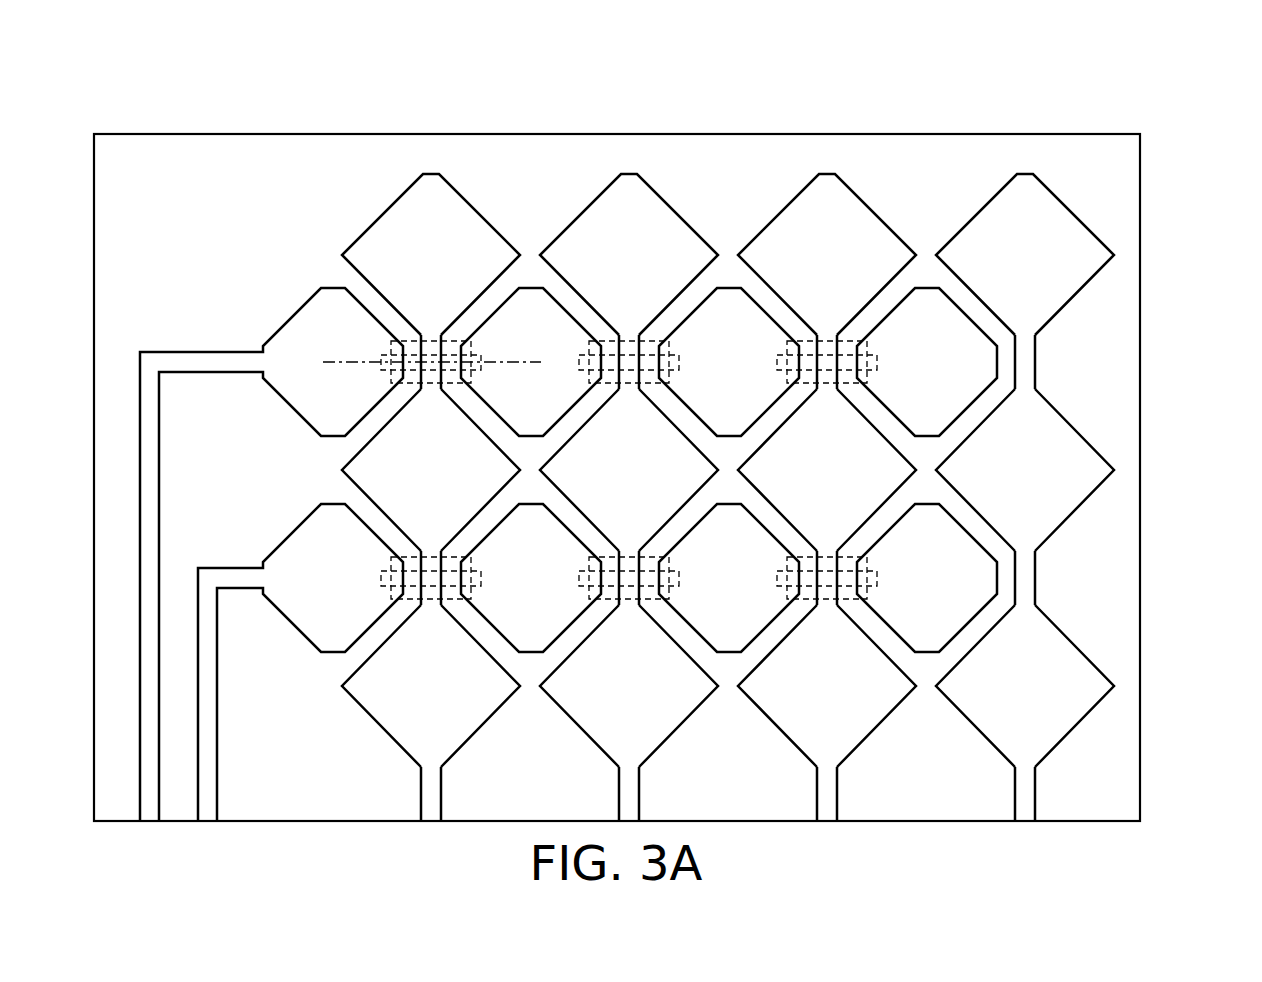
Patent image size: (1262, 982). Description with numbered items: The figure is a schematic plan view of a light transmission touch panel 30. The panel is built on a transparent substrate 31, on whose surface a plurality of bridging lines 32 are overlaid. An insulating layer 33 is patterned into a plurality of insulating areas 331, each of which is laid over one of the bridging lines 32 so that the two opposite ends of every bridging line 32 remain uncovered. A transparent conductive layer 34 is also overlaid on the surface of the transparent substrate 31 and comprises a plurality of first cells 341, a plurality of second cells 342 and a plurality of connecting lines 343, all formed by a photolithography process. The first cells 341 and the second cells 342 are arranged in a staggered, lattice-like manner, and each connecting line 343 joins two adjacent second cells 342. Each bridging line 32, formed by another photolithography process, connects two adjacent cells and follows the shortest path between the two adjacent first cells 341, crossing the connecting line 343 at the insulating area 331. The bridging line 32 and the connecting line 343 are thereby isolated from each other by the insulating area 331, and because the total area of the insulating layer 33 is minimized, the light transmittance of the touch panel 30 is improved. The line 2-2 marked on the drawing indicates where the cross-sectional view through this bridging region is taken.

The line 2- 2 is at (540, 361).
The light transmission touch panel 30 is at (1146, 100).
The transparent substrate 31 is at (948, 133).
The bridging line 32 is at (383, 362).
The insulating layer 33 is at (808, 63).
The insulating area 331 is at (410, 342).
The transparent conductive layer 34 is at (1202, 145).
The first cell 341 is at (923, 303).
The second cell 342 is at (1073, 212).
The connecting line 343 is at (1035, 362).